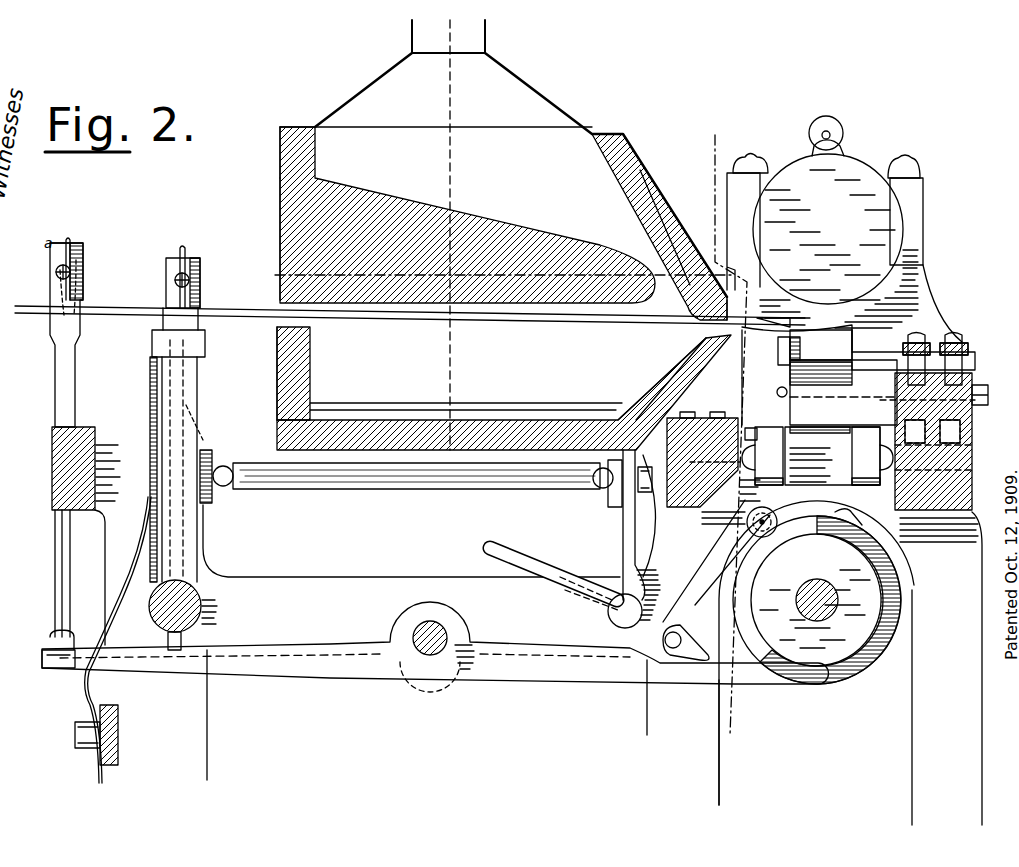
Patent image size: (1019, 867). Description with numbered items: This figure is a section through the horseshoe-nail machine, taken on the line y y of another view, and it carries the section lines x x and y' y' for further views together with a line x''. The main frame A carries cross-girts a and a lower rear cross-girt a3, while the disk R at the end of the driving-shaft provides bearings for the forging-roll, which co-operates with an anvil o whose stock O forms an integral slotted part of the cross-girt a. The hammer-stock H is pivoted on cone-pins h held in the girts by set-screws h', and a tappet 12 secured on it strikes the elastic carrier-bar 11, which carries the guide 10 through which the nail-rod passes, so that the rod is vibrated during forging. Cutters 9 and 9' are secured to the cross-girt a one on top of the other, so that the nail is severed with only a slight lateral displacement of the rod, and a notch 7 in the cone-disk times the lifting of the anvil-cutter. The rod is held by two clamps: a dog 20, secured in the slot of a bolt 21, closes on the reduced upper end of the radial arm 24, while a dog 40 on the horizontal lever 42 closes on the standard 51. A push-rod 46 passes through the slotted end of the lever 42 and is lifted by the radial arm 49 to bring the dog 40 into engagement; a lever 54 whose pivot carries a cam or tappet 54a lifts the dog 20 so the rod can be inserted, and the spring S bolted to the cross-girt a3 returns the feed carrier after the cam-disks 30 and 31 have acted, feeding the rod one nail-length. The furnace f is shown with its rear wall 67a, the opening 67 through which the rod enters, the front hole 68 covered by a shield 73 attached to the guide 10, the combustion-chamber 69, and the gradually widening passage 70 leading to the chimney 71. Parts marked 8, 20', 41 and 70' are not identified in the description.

The notch 7 is at (824, 118).
The feed block 8 is at (790, 390).
The cutter 9 is at (866, 359).
The cutter 9' is at (870, 341).
The guide 10 is at (775, 326).
The carrier-bar 11 is at (752, 352).
The tappet 12 is at (750, 420).
The dog 20 is at (191, 266).
The roller shaft 20' is at (426, 478).
The bolt 21 is at (175, 281).
The radial arm 24 is at (150, 383).
The cam-disk 30 is at (817, 600).
The cam-disk 31 is at (888, 560).
The dog 40 is at (72, 250).
The pin head 41 is at (75, 272).
The horizontal lever 42 is at (52, 252).
The push-rod 46 is at (56, 560).
The radial arm 49 is at (175, 672).
The standard 51 is at (55, 368).
The lever 54 is at (528, 558).
The cam or tappet 54a is at (720, 580).
The opening 67 is at (278, 310).
The rear wall 67a is at (280, 245).
The hole 68 is at (705, 328).
The combustion-chamber 69 is at (662, 377).
The passage 70 is at (503, 186).
The hopper neck 70' is at (419, 35).
The chimney 71 is at (448, 36).
The shield 73 is at (743, 303).
The main frame A is at (538, 545).
The disk R is at (825, 234).
The hammer-stock H is at (817, 456).
The anvil-stock O is at (843, 392).
The anvil o is at (821, 386).
The spring S is at (112, 596).
The cross-girt a is at (822, 457).
The lower rear cross-girt a3 is at (113, 728).
The furnace f is at (275, 200).
The cone-pins h is at (966, 442).
The set-screws h' is at (850, 417).
The section line x x is at (727, 436).
The center line x'' is at (483, 264).
The section line y y is at (991, 395).
The section line y' y' is at (702, 297).